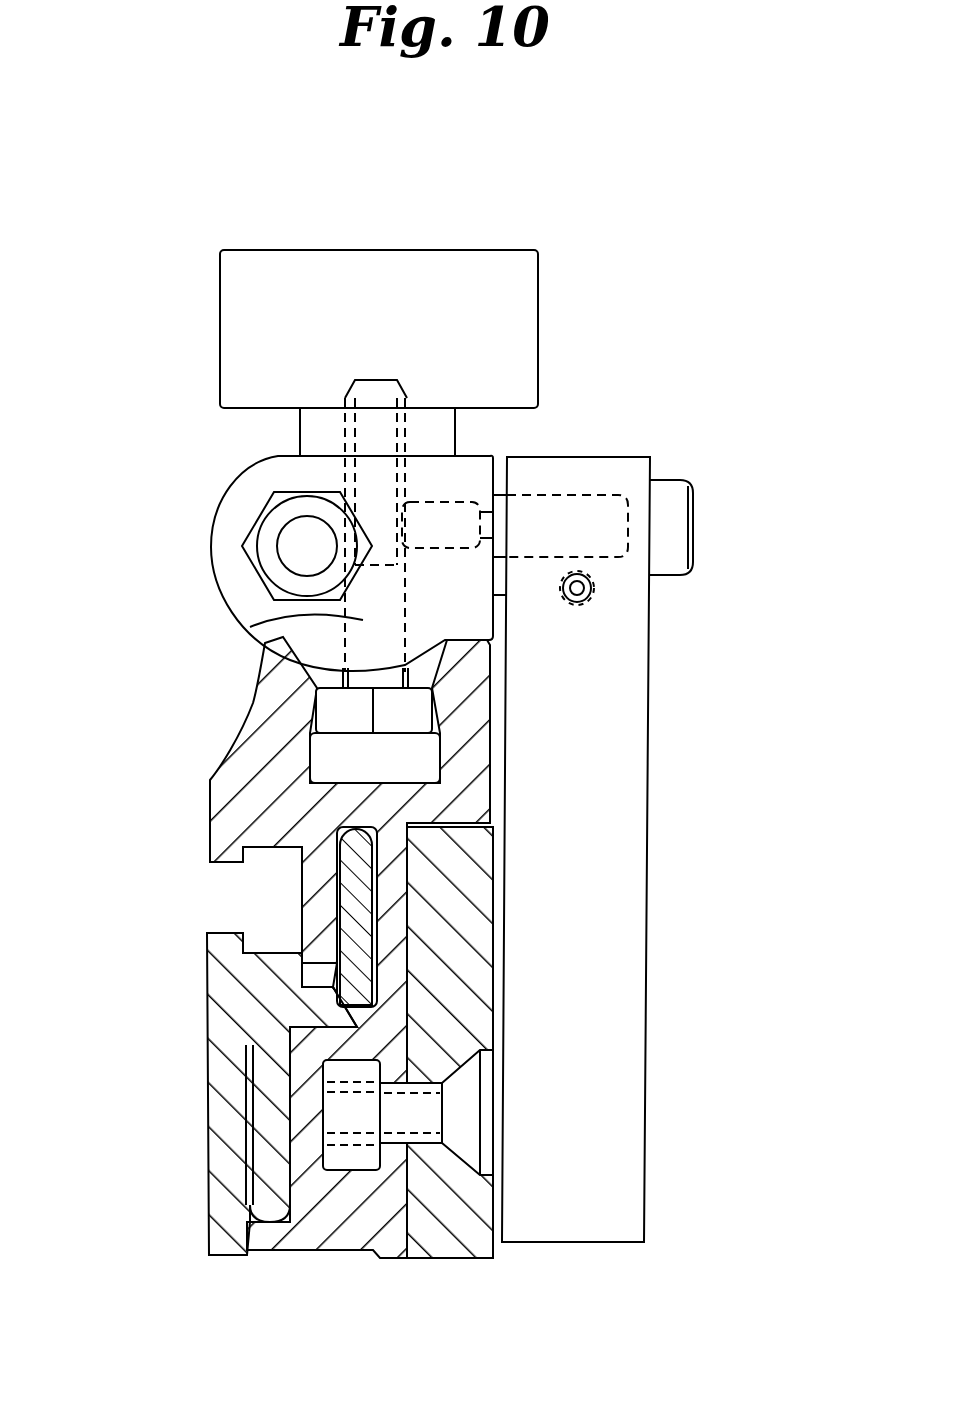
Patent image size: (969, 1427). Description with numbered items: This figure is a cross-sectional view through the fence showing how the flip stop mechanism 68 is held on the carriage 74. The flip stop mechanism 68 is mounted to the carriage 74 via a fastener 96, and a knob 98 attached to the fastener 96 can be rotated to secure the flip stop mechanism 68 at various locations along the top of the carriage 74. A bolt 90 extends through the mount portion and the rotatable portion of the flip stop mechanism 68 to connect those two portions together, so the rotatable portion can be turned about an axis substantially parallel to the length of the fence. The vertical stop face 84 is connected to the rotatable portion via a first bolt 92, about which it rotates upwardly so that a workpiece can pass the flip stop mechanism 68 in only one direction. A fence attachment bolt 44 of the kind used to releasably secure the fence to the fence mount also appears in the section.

The fence attachment bolt 44 is at (247, 1195).
The flip stop mechanism 68 is at (568, 402).
The carriage 74 is at (235, 772).
The vertical stop face 84 is at (652, 850).
The bolt 90 is at (285, 530).
The first bolt 92 is at (597, 502).
The fastener 96 is at (256, 626).
The knob 98 is at (497, 250).